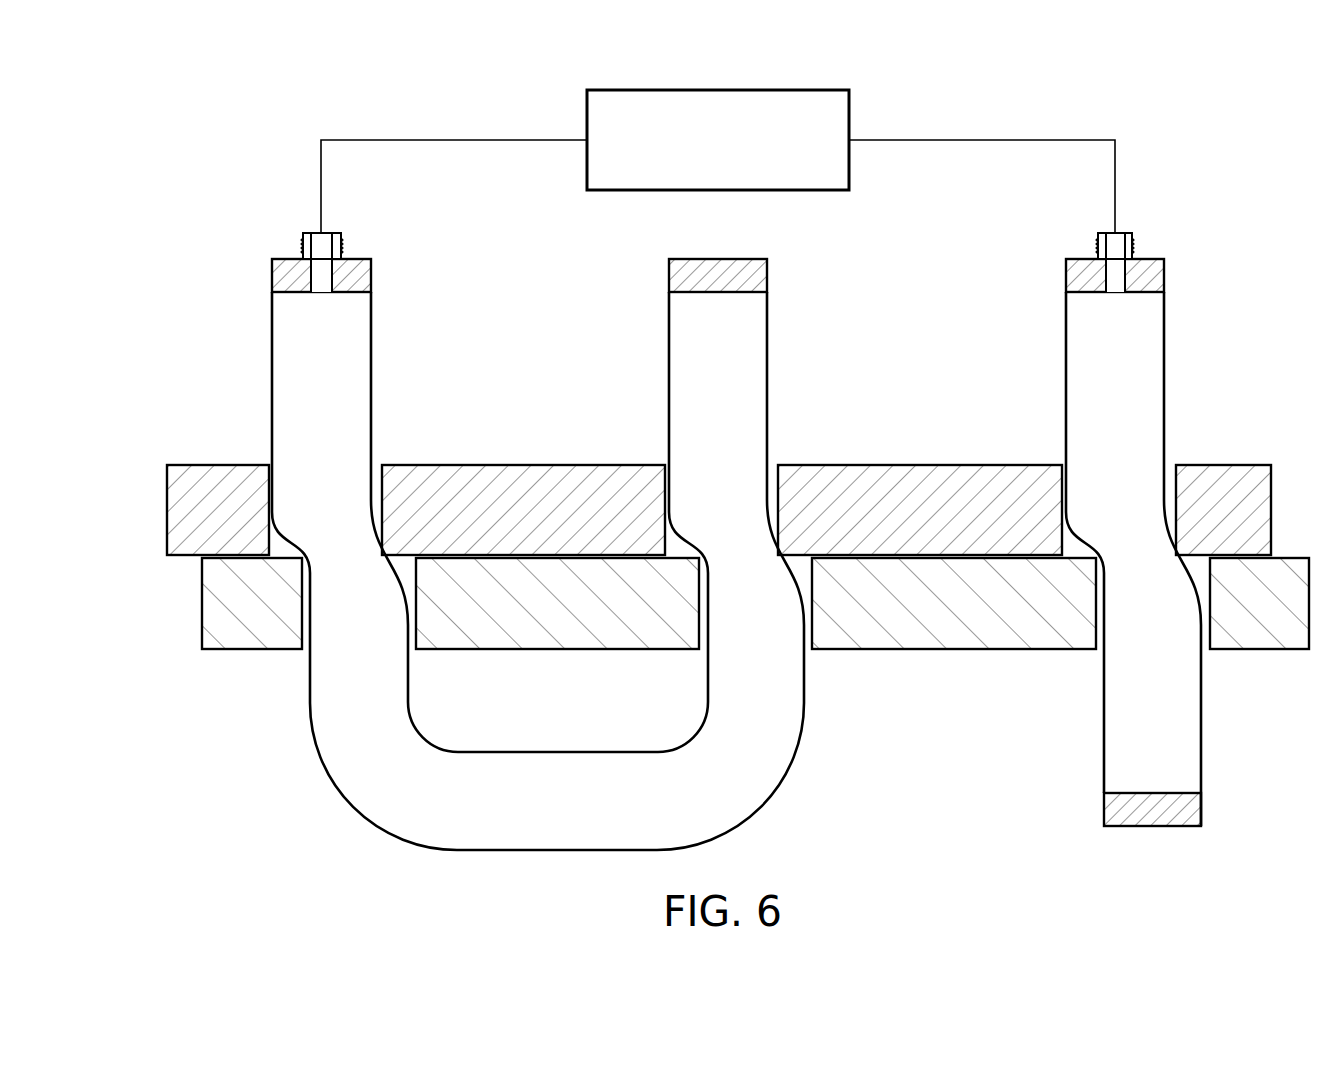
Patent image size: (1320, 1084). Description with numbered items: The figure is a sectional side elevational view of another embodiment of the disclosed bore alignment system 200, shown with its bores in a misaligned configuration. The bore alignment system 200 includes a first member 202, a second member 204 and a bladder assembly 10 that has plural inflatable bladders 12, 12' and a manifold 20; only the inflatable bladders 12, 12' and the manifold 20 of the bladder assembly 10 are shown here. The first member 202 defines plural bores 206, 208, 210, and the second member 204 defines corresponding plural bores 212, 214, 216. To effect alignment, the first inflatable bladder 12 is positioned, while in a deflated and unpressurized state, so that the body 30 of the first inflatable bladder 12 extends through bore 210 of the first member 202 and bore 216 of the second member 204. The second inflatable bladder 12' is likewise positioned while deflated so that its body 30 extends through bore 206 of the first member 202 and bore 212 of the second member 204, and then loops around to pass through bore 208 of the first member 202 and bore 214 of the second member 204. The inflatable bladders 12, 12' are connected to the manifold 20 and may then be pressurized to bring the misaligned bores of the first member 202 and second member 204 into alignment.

The bladder assembly 10 is at (268, 175).
The manifold 20 is at (849, 98).
The body 30 is at (1164, 377).
The first inflatable bladder 12 is at (1147, 270).
The second inflatable bladder 12' is at (354, 270).
The bore alignment system 200 is at (1225, 171).
The first member 202 is at (167, 512).
The second member 204 is at (202, 608).
The bore 206 is at (371, 500).
The bore 208 is at (767, 500).
The bore 210 is at (1176, 500).
The bore 212 is at (408, 625).
The bore 214 is at (804, 625).
The bore 216 is at (1201, 625).